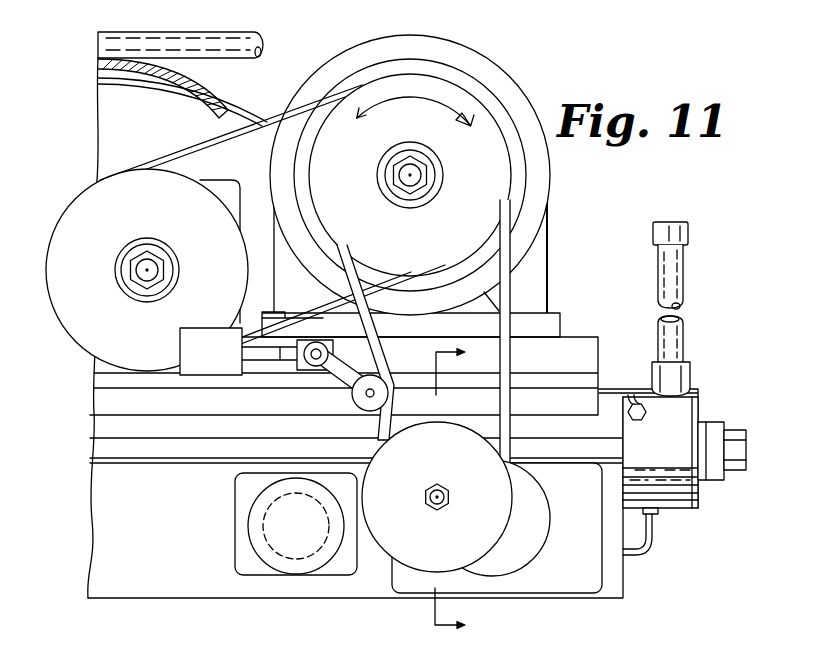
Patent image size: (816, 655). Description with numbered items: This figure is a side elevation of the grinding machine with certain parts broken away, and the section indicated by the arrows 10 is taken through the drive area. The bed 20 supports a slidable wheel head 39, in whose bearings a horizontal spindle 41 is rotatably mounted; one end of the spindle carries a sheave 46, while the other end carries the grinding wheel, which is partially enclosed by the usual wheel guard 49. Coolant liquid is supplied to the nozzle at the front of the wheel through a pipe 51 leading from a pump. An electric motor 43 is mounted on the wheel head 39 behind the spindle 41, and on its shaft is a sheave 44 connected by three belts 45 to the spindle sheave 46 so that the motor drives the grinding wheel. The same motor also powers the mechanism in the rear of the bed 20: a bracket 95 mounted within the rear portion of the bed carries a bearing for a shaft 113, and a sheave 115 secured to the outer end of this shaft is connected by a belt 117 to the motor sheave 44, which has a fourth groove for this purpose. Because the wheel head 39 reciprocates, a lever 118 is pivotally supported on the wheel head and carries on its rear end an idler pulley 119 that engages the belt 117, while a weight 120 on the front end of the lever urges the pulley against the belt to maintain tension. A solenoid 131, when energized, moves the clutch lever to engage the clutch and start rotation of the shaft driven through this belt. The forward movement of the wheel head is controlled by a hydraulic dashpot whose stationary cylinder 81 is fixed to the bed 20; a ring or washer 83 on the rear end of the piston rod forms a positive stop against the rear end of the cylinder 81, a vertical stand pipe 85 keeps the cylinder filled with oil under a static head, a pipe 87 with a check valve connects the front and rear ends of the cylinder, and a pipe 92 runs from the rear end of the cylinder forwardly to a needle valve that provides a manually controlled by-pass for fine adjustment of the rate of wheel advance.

The section line 10 is at (466, 490).
The bed 20 is at (148, 578).
The wheel head 39 is at (577, 350).
The spindle 41 is at (143, 272).
The electric motor 43 is at (447, 47).
The sheave 44 is at (415, 152).
The belts 45 is at (207, 145).
The sheave 46 is at (73, 243).
The wheel guard 49 is at (110, 131).
The pipe 51 is at (220, 45).
The cylinder 81 is at (679, 493).
The ring or washer 83 is at (712, 463).
The stand pipe 85 is at (682, 296).
The pipe 87 is at (650, 540).
The pipe 92 is at (641, 392).
The bracket 95 is at (497, 528).
The shaft 113 is at (436, 500).
The sheave 115 is at (437, 497).
The belt 117 is at (360, 318).
The lever 118 is at (327, 373).
The idler pulley 119 is at (362, 397).
The weight 120 is at (238, 351).
The solenoid 131 is at (297, 525).